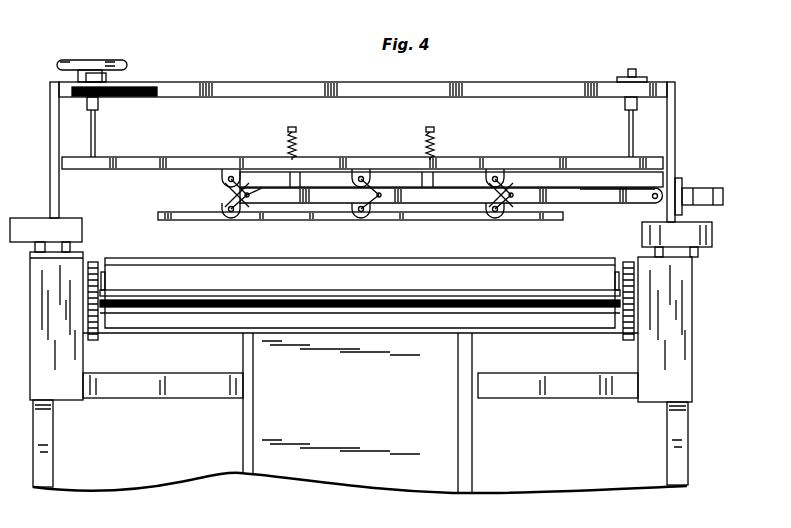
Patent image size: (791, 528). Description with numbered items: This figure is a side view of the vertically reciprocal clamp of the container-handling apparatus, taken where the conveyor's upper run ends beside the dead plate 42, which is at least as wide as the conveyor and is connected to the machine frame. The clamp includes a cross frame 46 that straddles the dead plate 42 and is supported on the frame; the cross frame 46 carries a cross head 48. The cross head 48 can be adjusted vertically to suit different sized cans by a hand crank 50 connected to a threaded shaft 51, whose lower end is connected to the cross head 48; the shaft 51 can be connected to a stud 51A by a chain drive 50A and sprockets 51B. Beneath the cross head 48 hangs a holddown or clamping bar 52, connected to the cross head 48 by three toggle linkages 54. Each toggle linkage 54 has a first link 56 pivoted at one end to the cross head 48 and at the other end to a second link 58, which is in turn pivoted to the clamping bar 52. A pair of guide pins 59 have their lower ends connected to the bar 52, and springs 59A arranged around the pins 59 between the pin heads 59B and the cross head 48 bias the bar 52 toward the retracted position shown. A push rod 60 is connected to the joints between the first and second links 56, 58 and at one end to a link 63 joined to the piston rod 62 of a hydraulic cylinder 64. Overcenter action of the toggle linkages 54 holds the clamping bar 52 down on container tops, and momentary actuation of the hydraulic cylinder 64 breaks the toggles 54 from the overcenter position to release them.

The dead plate 42 is at (135, 258).
The cross frame 46 is at (300, 82).
The cross head 48 is at (102, 170).
The hand crank 50 is at (88, 60).
The chain drive 50A is at (142, 97).
The threaded shaft 51 is at (96, 137).
The stud 51A is at (628, 130).
The sprockets 51B is at (108, 78).
The clamping bar 52 is at (242, 220).
The toggle linkages 54 is at (192, 188).
The first link 56 is at (235, 170).
The second link 58 is at (232, 198).
The guide pins 59 is at (292, 205).
The springs 59A is at (300, 142).
The pin heads 59B is at (310, 117).
The push rod 60 is at (337, 203).
The piston rod 62 is at (655, 199).
The link 63 is at (600, 196).
The hydraulic cylinder 64 is at (716, 192).